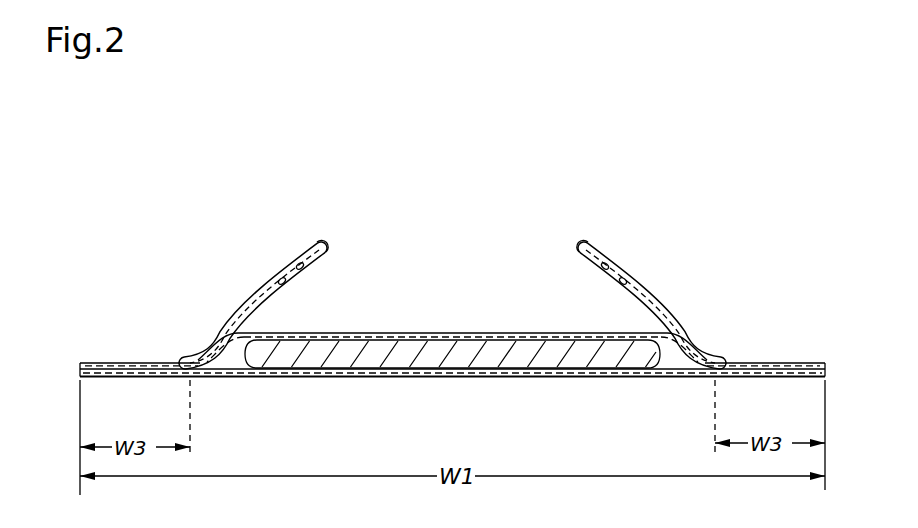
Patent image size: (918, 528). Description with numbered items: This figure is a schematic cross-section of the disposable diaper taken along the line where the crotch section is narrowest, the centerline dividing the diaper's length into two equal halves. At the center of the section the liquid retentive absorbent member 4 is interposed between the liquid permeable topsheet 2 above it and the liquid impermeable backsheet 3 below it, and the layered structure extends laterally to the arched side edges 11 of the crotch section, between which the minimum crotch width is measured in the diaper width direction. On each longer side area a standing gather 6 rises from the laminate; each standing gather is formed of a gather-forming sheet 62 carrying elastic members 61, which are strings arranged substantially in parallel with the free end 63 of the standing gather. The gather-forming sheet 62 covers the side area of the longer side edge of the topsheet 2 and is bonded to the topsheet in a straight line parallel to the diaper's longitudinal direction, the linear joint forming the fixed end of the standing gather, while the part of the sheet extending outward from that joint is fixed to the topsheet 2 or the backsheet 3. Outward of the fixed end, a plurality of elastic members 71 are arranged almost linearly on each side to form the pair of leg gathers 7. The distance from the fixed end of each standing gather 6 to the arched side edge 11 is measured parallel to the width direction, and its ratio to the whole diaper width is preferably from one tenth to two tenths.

The topsheet 2 is at (366, 331).
The backsheet 3 is at (508, 364).
The absorbent member 4 is at (407, 358).
The standing gathers 6 is at (231, 256).
The elastic members 61 is at (316, 246).
The gather-forming sheet 62 is at (222, 313).
The free end 63 is at (328, 243).
The leg gathers 7 is at (148, 337).
The elastic members 71 is at (140, 379).
The arched side edges 11 is at (78, 367).